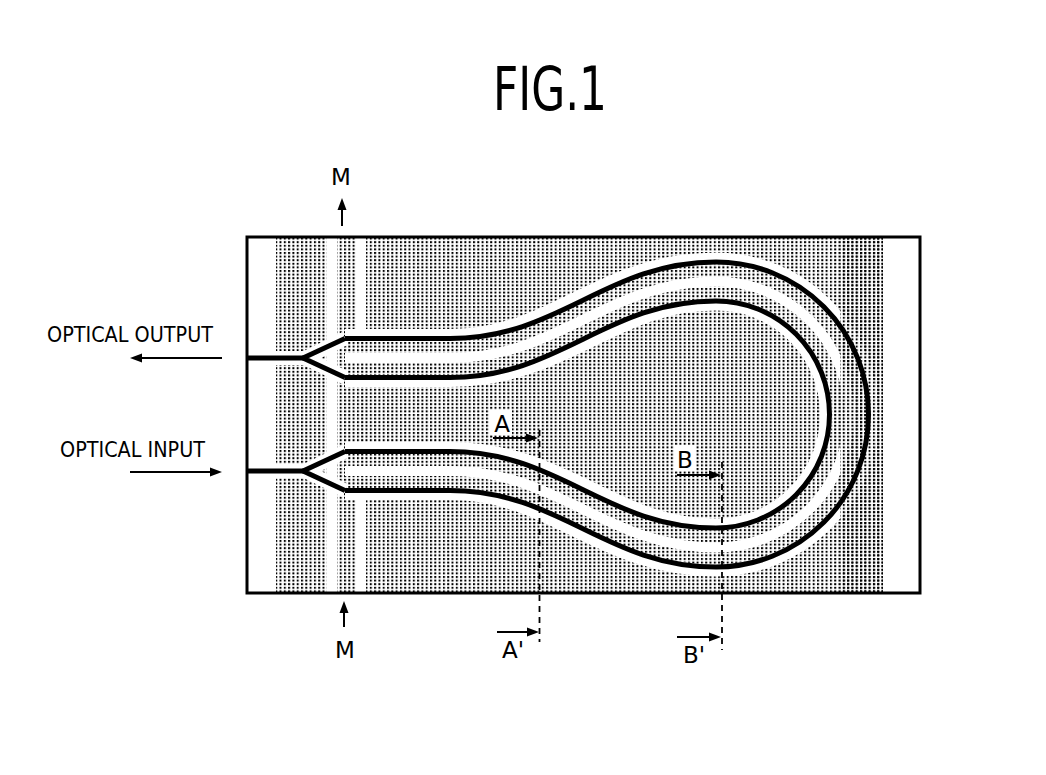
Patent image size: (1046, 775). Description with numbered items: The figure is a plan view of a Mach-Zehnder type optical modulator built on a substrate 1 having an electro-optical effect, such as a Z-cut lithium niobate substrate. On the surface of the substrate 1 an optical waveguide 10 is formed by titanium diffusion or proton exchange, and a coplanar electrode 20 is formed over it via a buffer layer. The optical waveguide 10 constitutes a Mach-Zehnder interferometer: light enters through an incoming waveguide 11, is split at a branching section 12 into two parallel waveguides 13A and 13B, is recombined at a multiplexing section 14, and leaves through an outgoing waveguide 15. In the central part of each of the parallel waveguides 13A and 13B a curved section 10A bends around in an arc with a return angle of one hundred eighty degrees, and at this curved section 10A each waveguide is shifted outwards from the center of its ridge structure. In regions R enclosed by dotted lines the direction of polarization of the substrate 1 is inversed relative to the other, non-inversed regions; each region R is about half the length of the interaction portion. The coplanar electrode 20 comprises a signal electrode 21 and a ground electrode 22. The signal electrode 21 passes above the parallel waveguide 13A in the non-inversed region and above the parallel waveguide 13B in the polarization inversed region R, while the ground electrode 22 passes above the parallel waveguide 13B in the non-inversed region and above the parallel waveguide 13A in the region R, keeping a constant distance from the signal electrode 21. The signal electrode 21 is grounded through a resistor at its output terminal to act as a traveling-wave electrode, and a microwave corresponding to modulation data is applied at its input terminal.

The substrate 1 is at (922, 596).
The optical waveguide 10 is at (555, 436).
The curved section 10A is at (845, 248).
The incoming waveguide 11 is at (260, 472).
The branching section 12 is at (301, 475).
The parallel waveguide 13A is at (535, 317).
The parallel waveguide 13B is at (450, 377).
The multiplexing section 14 is at (302, 355).
The outgoing waveguide 15 is at (265, 356).
The coplanar electrode 20 is at (579, 490).
The signal electrode 21 is at (367, 592).
The ground electrode 22 is at (417, 592).
The polarization inversed region R is at (817, 550).